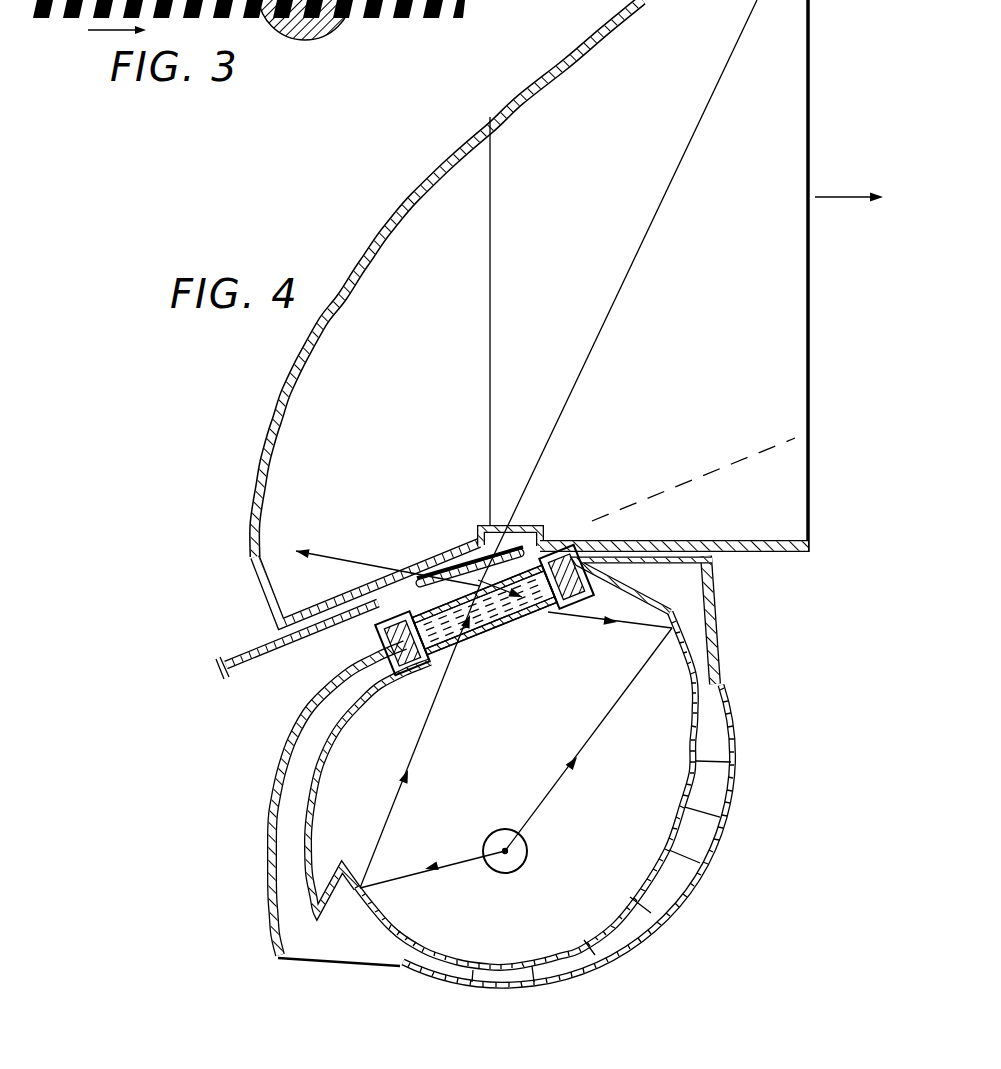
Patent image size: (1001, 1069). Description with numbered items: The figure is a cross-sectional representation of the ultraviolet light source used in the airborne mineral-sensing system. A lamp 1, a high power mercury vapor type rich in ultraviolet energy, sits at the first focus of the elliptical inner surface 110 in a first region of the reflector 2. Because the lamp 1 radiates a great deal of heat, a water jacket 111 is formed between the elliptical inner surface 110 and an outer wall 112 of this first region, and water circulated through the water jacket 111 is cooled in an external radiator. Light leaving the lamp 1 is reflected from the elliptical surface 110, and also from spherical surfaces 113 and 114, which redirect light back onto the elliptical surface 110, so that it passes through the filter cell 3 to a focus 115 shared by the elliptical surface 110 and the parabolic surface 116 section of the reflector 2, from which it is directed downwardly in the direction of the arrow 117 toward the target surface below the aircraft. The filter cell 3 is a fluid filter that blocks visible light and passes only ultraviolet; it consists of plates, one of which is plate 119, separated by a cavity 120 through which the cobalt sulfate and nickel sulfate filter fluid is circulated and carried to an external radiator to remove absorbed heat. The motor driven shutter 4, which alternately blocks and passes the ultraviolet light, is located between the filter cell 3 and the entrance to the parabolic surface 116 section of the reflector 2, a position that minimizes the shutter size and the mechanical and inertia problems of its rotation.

The lamp 1 is at (497, 829).
The reflector 2 is at (745, 777).
The filter cell 3 is at (420, 602).
The shutter 4 is at (318, 647).
The elliptical inner surface 110 is at (648, 857).
The water jacket 111 is at (690, 848).
The outer wall 112 is at (645, 936).
The spherical surface 113 is at (316, 802).
The spherical surface 114 is at (646, 601).
The focus 115 is at (478, 580).
The parabolic surface 116 is at (366, 268).
The arrow 117 is at (843, 197).
The plate 119 is at (521, 623).
The cavity 120 is at (492, 615).